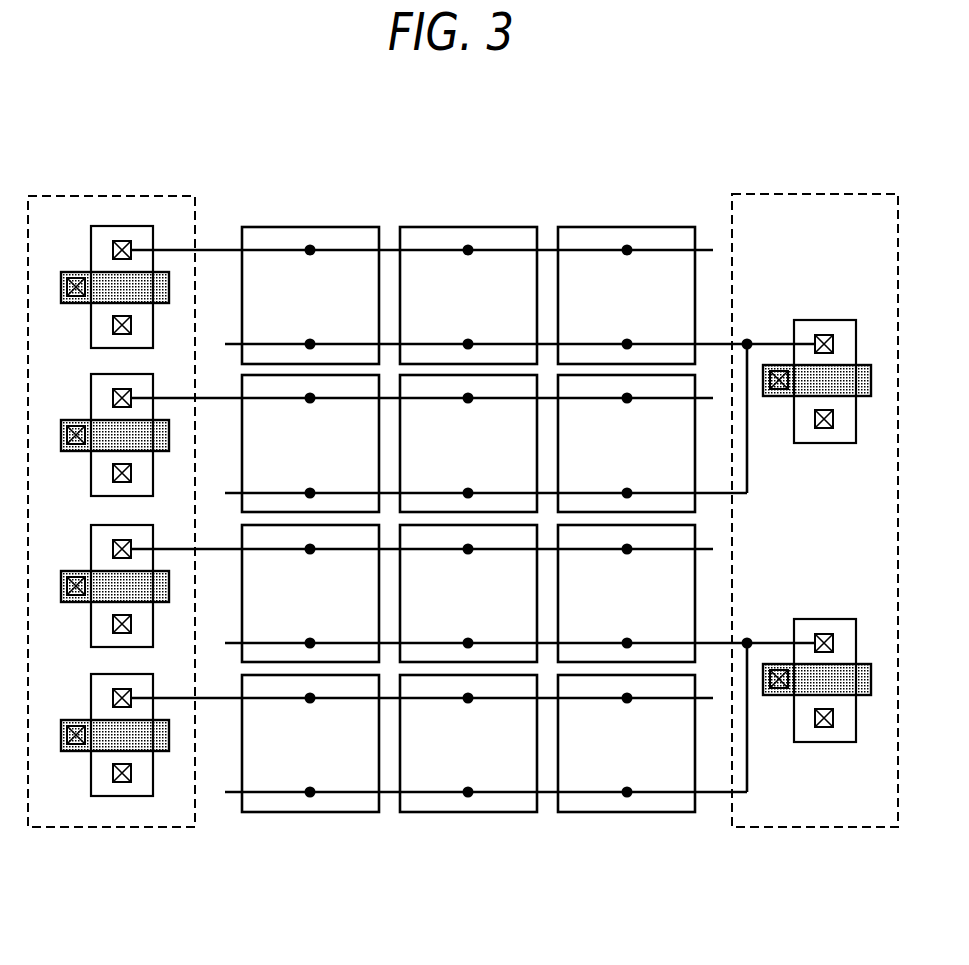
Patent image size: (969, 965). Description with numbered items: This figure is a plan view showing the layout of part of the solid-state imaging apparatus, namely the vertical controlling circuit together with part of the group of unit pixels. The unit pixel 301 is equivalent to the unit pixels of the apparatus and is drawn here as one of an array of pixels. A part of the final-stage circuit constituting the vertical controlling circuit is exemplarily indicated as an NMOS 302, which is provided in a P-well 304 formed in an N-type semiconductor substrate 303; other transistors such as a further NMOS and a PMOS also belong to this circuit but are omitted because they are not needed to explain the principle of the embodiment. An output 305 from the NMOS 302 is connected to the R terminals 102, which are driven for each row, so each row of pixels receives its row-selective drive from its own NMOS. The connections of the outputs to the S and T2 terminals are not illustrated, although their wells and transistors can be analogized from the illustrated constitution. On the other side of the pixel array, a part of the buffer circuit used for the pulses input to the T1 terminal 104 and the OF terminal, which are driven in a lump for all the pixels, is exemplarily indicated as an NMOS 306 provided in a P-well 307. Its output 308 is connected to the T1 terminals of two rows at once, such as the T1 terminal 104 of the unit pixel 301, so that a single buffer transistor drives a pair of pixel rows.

The R terminal 102 is at (310, 253).
The T1 terminal 104 is at (311, 343).
The unit pixel 301 is at (313, 227).
The NMOS 302 is at (91, 246).
The N-type semiconductor substrate 303 is at (468, 479).
The P-well 304 is at (116, 490).
The output 305 is at (391, 250).
The NMOS 306 is at (824, 320).
The P-well 307 is at (807, 490).
The output 308 is at (710, 344).